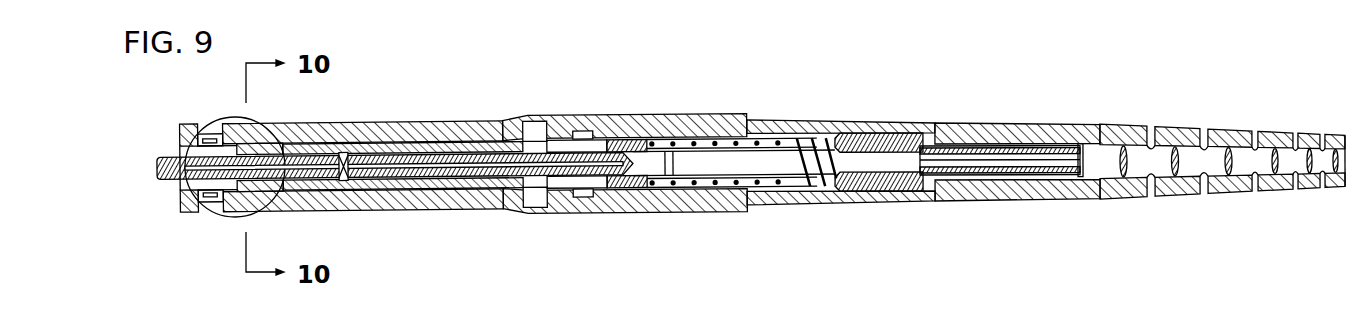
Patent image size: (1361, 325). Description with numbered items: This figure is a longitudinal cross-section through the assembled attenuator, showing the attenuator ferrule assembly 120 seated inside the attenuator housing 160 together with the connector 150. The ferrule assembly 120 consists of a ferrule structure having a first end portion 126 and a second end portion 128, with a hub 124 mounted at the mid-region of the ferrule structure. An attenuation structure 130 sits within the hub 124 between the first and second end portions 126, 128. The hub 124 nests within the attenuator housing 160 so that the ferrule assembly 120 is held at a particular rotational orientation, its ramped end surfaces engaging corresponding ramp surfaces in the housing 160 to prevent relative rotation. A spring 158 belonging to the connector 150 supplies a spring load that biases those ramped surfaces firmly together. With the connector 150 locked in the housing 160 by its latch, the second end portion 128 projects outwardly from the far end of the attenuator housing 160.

The attenuator ferrule assembly 120 is at (323, 121).
The hub 124 is at (380, 155).
The first end portion 126 is at (167, 180).
The second end portion 128 is at (450, 182).
The attenuation structure 130 is at (343, 153).
The connector 150 is at (835, 122).
The spring 158 is at (767, 147).
The attenuator housing 160 is at (500, 120).